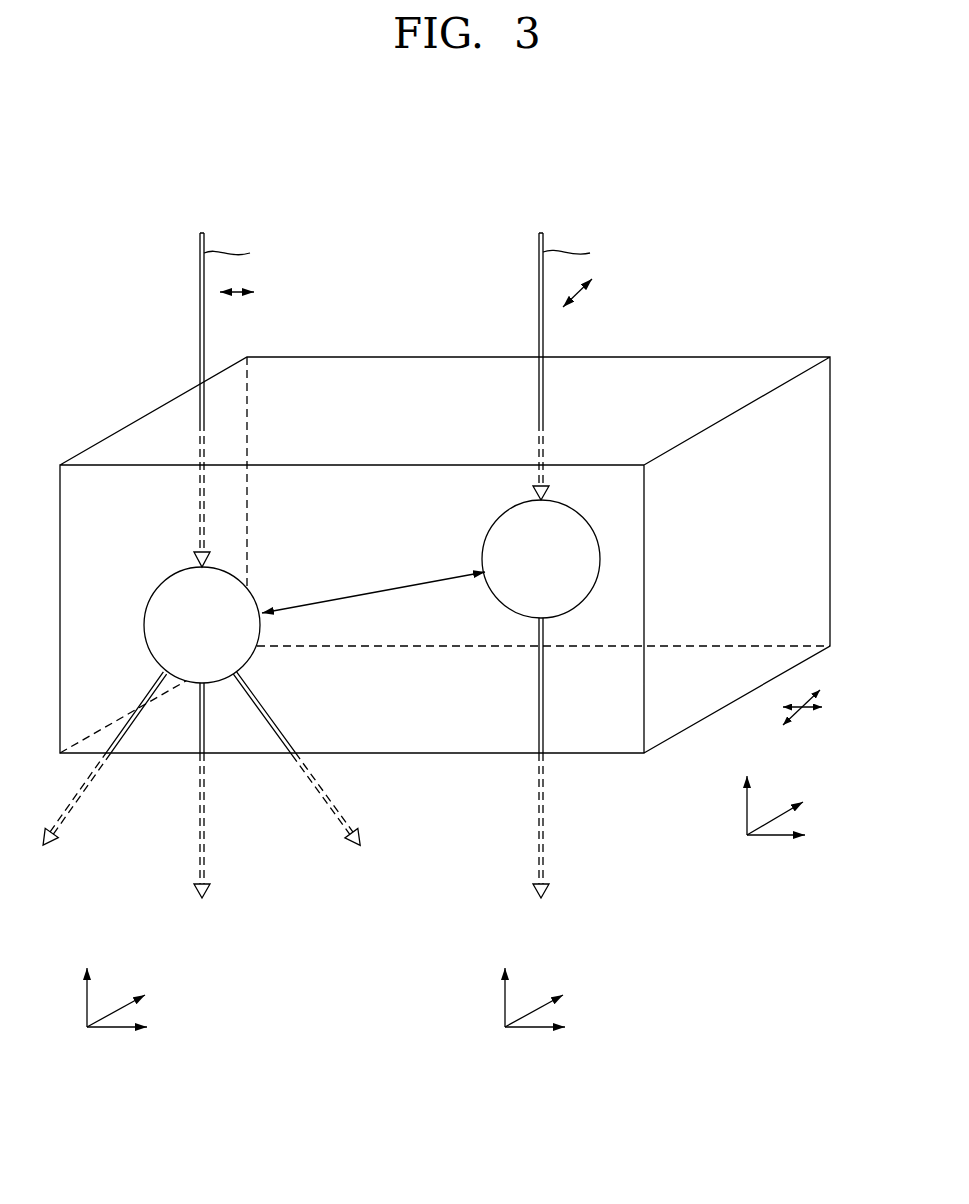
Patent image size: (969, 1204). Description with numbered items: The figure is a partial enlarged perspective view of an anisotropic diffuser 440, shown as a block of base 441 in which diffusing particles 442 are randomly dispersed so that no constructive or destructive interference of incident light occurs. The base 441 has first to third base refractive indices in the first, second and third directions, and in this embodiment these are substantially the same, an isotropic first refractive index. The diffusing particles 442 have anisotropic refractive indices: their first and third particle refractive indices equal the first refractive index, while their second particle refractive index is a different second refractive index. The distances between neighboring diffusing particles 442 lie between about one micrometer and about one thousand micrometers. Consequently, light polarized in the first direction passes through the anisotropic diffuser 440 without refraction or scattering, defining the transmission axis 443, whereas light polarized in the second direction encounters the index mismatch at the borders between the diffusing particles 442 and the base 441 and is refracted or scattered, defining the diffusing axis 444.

The anisotropic diffuser 440 is at (789, 218).
The base 441 is at (713, 371).
The diffusing particles 442 is at (155, 590).
The transmission axis 443 is at (823, 700).
The diffusing axis 444 is at (823, 708).